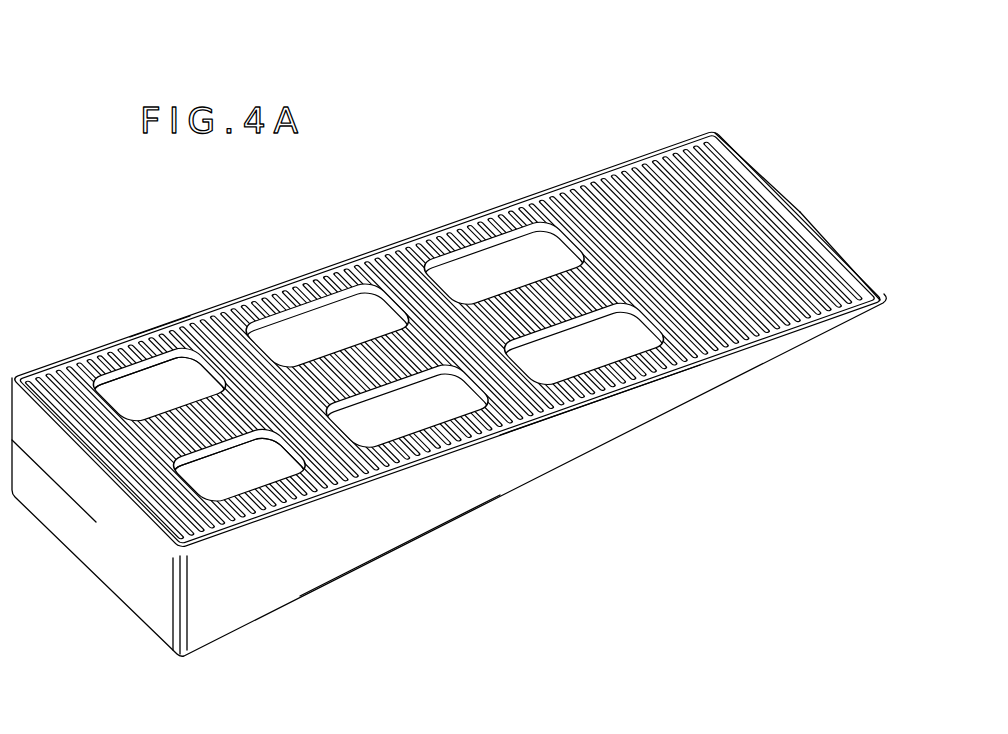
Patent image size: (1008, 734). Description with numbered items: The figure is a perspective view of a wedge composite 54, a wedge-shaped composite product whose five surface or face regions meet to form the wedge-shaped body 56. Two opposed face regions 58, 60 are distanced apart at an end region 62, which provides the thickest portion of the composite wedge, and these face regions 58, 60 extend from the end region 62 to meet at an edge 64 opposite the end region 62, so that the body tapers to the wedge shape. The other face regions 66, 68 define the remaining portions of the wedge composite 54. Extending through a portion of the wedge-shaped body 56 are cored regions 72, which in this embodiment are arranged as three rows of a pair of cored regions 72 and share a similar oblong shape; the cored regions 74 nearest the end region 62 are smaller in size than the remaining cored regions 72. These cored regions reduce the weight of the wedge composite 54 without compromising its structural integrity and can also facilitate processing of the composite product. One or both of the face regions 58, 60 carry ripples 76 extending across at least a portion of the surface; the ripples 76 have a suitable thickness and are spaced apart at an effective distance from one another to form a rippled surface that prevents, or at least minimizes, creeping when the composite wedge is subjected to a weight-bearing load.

The wedge composite 54 is at (537, 88).
The wedge-shaped body 56 is at (653, 126).
The face region 58 is at (692, 244).
The face region 60 is at (552, 478).
The end region 62 is at (95, 520).
The edge 64 is at (773, 181).
The face region 66 is at (382, 522).
The face region 68 is at (206, 313).
The cored regions 72 is at (522, 258).
The cored regions 74 is at (148, 397).
The ripples 76 is at (853, 280).